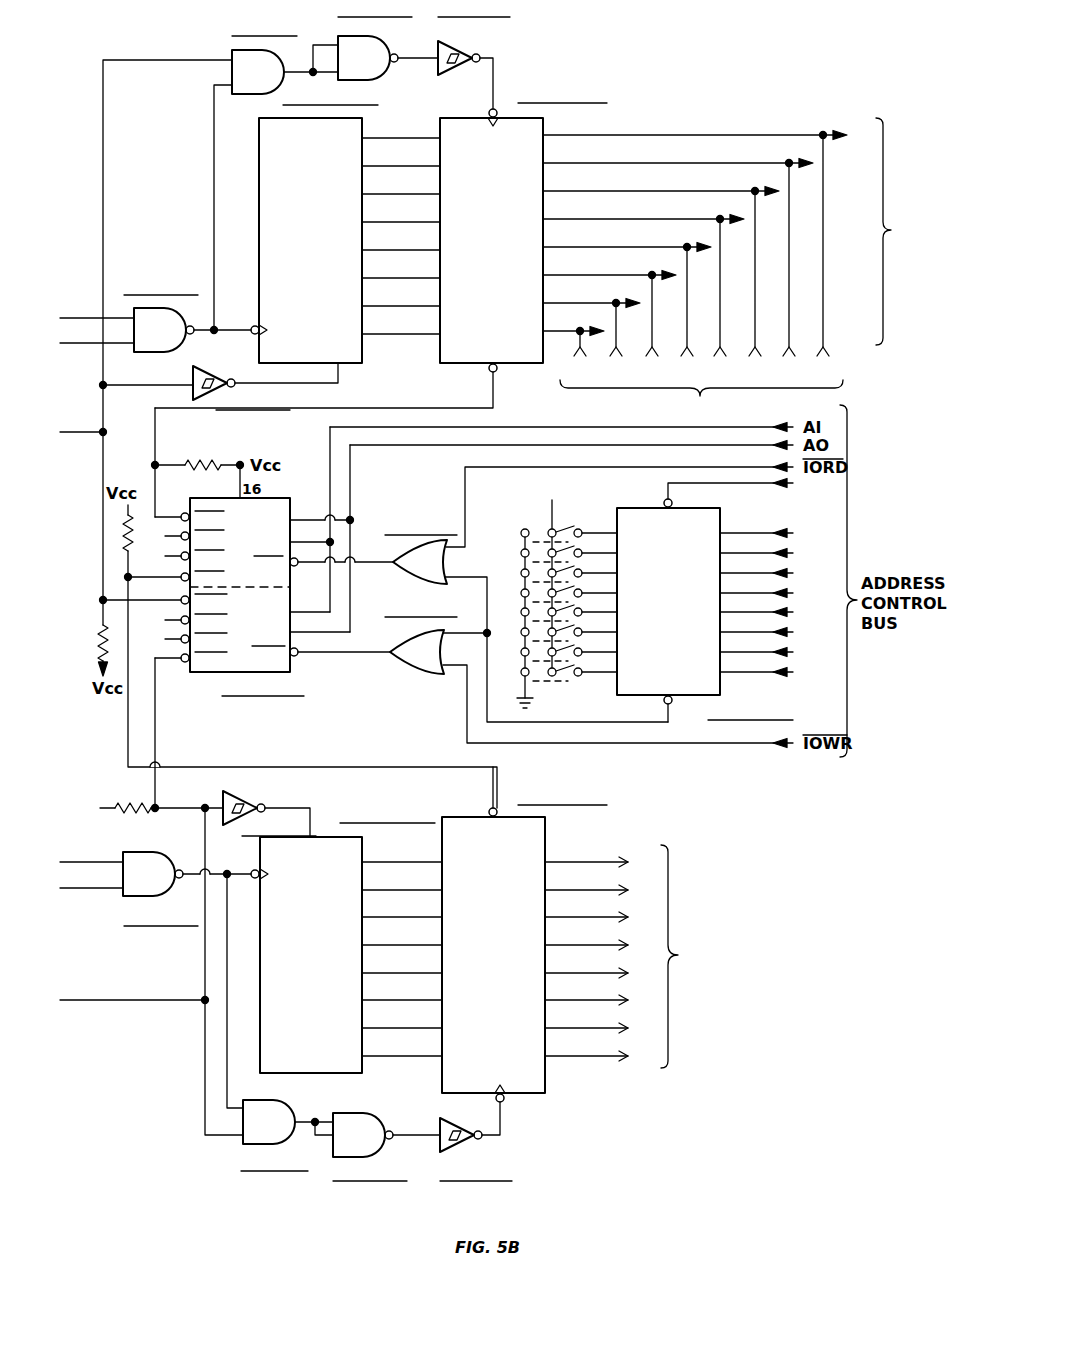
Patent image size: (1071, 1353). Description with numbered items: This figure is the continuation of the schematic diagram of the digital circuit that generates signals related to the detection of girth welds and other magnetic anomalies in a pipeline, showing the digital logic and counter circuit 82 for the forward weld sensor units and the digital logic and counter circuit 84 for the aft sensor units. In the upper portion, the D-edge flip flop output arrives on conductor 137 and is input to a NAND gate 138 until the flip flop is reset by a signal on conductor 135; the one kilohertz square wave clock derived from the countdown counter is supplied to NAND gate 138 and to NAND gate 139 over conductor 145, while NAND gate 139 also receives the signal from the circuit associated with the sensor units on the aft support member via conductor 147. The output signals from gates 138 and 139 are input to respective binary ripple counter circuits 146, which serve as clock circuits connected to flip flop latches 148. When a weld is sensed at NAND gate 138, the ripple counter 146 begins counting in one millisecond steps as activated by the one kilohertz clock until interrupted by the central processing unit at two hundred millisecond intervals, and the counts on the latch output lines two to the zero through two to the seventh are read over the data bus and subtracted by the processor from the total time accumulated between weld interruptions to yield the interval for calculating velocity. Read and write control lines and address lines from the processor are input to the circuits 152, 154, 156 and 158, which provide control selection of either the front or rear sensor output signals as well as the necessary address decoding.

The digital logic and counter circuit 82 is at (672, 74).
The digital logic and counter circuit 84 is at (200, 1158).
The conductor 135 is at (88, 434).
The conductor 137 is at (86, 318).
The NAND gate 138 is at (148, 354).
The NAND gate 139 is at (130, 898).
The conductor 145 is at (86, 343).
The binary ripple counter circuit 146 is at (258, 196).
The conductor 147 is at (86, 888).
The flip flop latch 148 is at (545, 116).
The circuit 152 is at (708, 492).
The circuit 154 is at (393, 548).
The circuit 156 is at (393, 664).
The circuit 158 is at (238, 612).